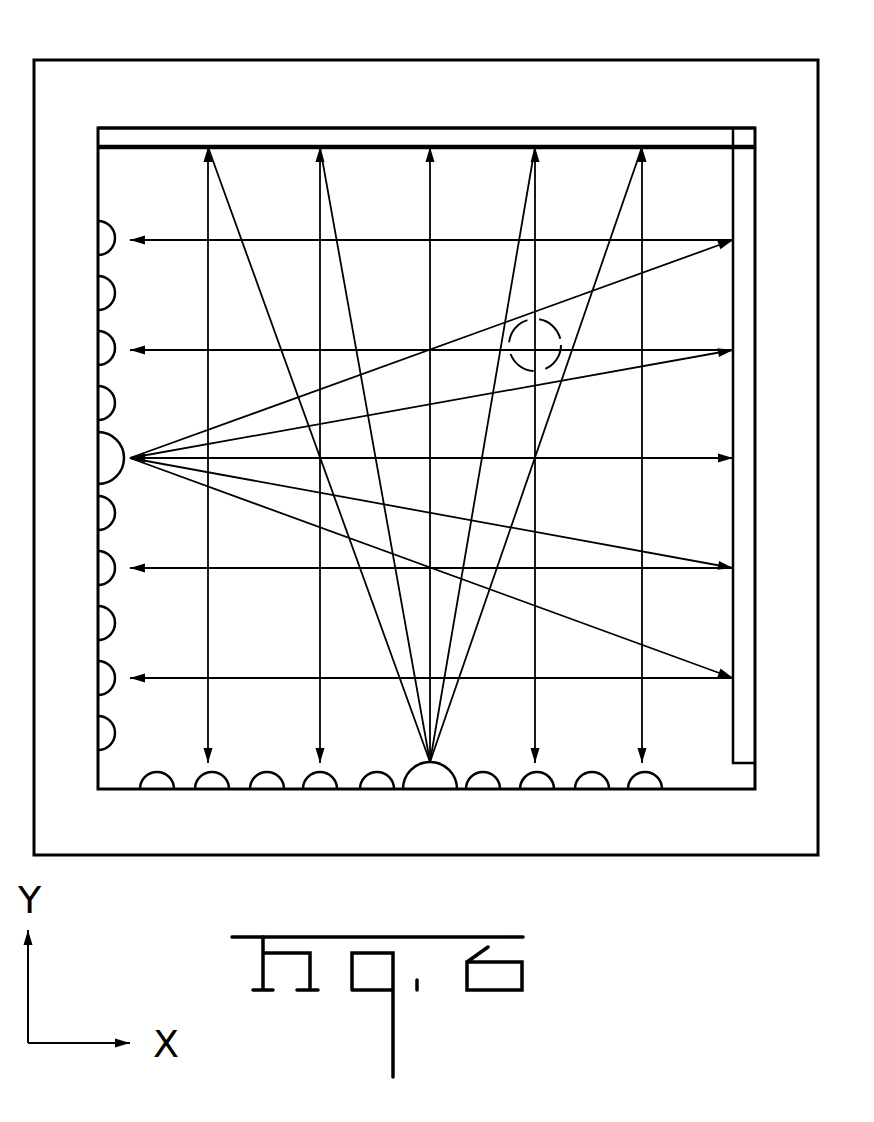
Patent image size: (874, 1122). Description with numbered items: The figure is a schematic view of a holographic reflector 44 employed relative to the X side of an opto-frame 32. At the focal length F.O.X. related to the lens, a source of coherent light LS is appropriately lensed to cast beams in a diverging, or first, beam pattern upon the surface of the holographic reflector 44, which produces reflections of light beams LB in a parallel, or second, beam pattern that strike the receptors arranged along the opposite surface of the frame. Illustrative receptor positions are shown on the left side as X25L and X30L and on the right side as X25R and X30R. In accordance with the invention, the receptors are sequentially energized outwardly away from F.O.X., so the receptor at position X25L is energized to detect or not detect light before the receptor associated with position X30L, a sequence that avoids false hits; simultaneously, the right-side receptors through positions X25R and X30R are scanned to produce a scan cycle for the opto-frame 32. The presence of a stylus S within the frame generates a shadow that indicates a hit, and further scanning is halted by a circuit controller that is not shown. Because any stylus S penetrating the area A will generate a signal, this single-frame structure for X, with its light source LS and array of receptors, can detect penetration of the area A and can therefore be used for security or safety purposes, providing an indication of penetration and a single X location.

The opto-frame 32 is at (508, 48).
The holographic reflector 44 is at (578, 138).
The area A is at (447, 172).
The stylus S is at (541, 327).
The light beams LB is at (565, 370).
The source of coherent light LS is at (440, 770).
The receptor position X30L is at (163, 782).
The receptor position X30R is at (645, 787).
The receptor position X25L is at (315, 778).
The receptor position X25R is at (537, 785).
The focal length F.O.X. is at (425, 815).